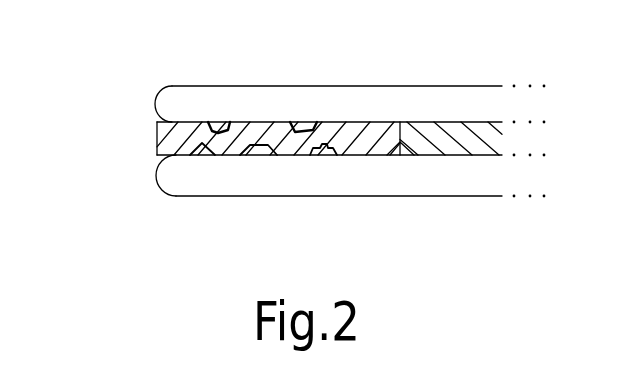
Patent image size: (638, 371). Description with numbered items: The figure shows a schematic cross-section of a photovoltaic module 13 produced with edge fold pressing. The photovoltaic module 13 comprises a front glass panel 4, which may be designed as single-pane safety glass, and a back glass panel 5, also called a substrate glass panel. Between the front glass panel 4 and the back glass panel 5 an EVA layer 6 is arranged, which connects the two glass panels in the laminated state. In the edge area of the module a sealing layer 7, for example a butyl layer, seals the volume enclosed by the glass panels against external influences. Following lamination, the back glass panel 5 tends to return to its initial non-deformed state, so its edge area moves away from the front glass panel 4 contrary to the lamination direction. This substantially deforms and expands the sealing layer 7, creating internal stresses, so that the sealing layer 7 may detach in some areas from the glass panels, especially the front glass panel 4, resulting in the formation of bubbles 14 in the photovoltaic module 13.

The front glass panel 4 is at (470, 173).
The back glass panel 5 is at (442, 100).
The EVA layer 6 is at (478, 142).
The sealing layer 7 is at (348, 135).
The photovoltaic module 13 is at (138, 208).
The bubbles 14 is at (222, 124).